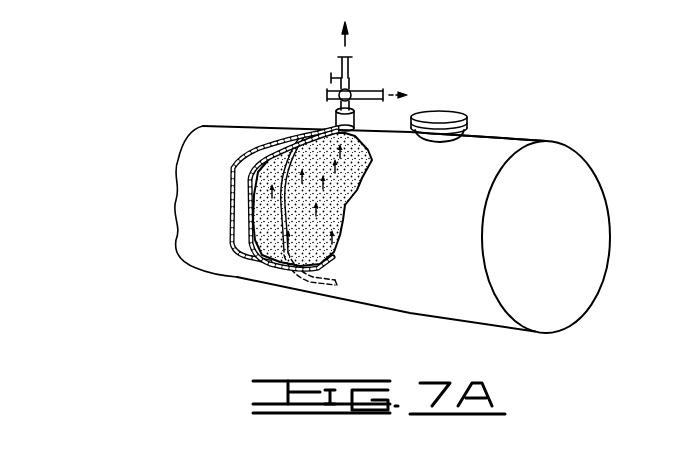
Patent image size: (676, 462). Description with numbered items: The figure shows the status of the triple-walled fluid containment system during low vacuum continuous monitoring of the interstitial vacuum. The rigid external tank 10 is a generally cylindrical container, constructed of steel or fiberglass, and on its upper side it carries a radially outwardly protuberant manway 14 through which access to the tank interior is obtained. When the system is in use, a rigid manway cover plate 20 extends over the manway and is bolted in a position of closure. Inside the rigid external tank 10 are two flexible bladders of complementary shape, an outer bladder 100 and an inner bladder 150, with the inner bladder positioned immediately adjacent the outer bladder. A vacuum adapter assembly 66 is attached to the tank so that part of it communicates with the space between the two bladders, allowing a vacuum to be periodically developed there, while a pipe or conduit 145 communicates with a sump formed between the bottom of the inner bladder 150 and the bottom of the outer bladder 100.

The rigid external tank 10 is at (580, 190).
The manway 14 is at (475, 130).
The manway cover plate 20 is at (452, 115).
The vacuum adapter assembly 66 is at (365, 78).
The outer bladder 100 is at (243, 160).
The conduit 145 is at (283, 257).
The inner bladder 150 is at (332, 217).